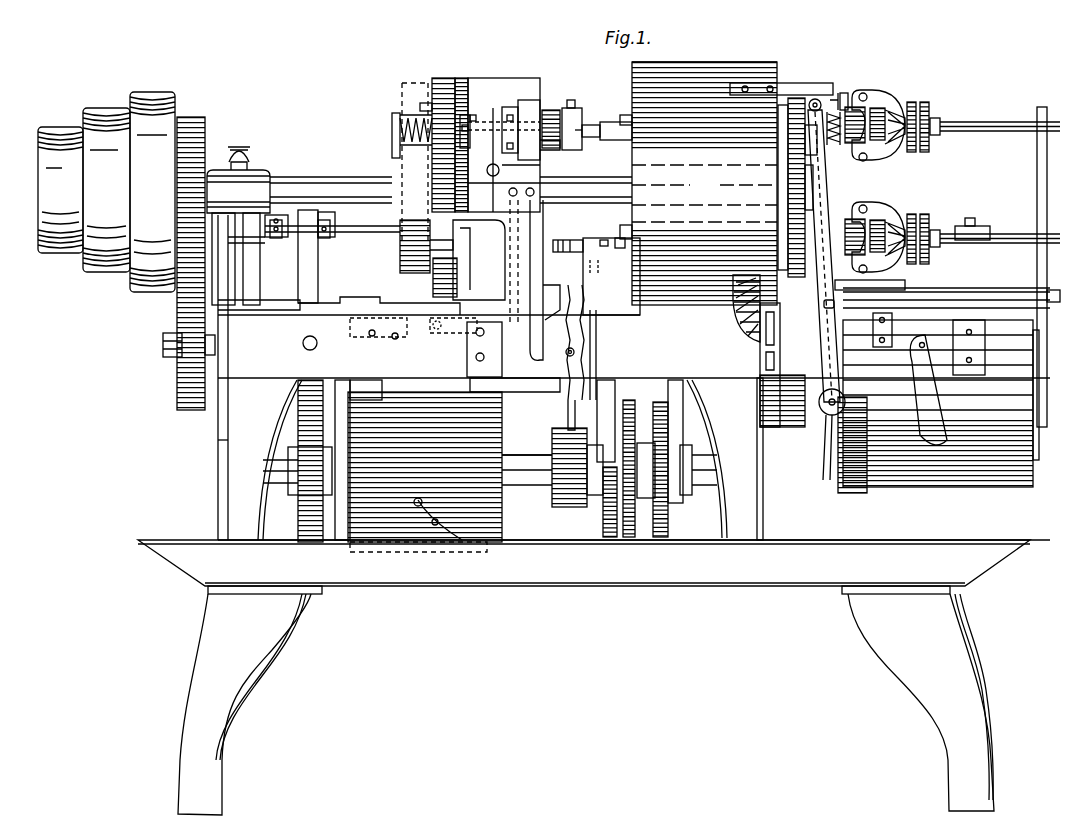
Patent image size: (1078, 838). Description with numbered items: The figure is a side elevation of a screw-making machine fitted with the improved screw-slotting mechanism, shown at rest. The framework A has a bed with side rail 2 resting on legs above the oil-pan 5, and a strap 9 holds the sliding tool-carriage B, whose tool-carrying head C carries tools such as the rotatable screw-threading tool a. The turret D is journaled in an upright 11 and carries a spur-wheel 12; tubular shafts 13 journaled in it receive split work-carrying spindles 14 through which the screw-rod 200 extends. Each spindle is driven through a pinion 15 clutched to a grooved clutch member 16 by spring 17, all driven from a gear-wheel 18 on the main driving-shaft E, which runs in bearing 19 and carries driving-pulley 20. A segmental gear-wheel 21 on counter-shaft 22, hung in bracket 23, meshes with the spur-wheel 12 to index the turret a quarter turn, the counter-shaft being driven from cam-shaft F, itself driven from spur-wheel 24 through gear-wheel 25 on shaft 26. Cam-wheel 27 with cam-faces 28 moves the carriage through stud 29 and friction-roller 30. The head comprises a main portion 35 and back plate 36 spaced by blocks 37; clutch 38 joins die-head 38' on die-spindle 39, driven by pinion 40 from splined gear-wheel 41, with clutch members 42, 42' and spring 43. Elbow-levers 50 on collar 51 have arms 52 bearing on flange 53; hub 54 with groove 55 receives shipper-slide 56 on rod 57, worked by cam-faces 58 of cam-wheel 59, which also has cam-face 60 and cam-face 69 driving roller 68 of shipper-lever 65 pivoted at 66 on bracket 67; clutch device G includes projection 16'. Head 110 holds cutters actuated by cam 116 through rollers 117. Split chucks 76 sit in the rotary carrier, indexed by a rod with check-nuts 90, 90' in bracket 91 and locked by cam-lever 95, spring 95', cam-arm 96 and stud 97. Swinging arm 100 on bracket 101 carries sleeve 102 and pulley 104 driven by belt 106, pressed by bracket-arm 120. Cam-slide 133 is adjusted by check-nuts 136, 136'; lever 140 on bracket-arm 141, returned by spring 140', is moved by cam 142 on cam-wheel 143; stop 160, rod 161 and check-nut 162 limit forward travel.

The side rail 2 is at (272, 376).
The oil-pan 5 is at (160, 548).
The strap 9 is at (450, 300).
The upright 11 is at (726, 183).
The spur or driving-wheel 12 is at (740, 313).
The tubular shaft or sleeve 13 is at (795, 100).
The split chuck-sleeve or work-carrying spindle 14 is at (942, 124).
The pinion 15 is at (838, 98).
The clutch member 16 is at (829, 156).
The L-shaped projection 16' is at (829, 79).
The spiral spring 17 is at (840, 143).
The gear-wheel 18 is at (813, 193).
The bearing 19 is at (220, 170).
The driving-pulley 20 is at (98, 116).
The segmental gear-wheel 21 is at (776, 360).
The counter-shaft 22 is at (1034, 425).
The bracket or hanger 23 is at (323, 412).
The spur-wheel 24 is at (192, 123).
The gear-wheel 25 is at (185, 290).
The shaft 26 is at (180, 358).
The cam-wheel 27 is at (398, 542).
The cam-faces 28 is at (383, 392).
The stud 29 is at (472, 380).
The friction-roller 30 is at (487, 402).
The forward or main portion of tool-carriage head 35 is at (540, 92).
The back plate 36 is at (460, 127).
The blocks 37 is at (460, 80).
The pull-off or pin clutch device member 38 is at (555, 115).
The die-head 38' is at (584, 116).
The die-spindle 39 is at (575, 140).
The pinion 40 is at (472, 100).
The gear-wheel 41 is at (473, 184).
The clutch member 42 is at (397, 128).
The clutch member 42' is at (420, 82).
The spring 43 is at (420, 146).
The elbow-levers 50 is at (875, 113).
The collar 51 is at (868, 95).
The inwardly-extending arms 52 is at (910, 113).
The flange 53 is at (918, 152).
The hub 54 is at (928, 140).
The annular groove 55 is at (950, 120).
The shipper-slide 56 is at (962, 246).
The rod 57 is at (930, 297).
The cam-faces 58 is at (918, 400).
The cam-wheel 59 is at (967, 462).
The cam-face 60 is at (988, 343).
The shipper-lever 65 is at (826, 414).
The pivot 66 is at (826, 298).
The bracket 67 is at (826, 348).
The roller 68 is at (828, 440).
The cam-face 69 is at (840, 472).
The tubular split chucks 76 is at (572, 246).
The check-nut 90 is at (332, 238).
The check-nut 90' is at (334, 237).
The bracket 91 is at (315, 265).
The cam-lever 95 is at (395, 321).
The spring 95' is at (398, 342).
The curved cam-arm 96 is at (395, 339).
The spring-pressed stud 97 is at (372, 336).
The swinging arm 100 is at (550, 142).
The bracket 101 is at (513, 108).
The transverse sleeve 102 is at (479, 260).
The driving-pulley 104 is at (400, 246).
The driving-belt 106 is at (402, 90).
The head 110 is at (611, 276).
The cam 116 is at (610, 512).
The friction-rollers 117 is at (633, 442).
The bracket-arm 120 is at (520, 257).
The cam-slide 133 is at (298, 237).
The check-nut 136 is at (296, 189).
The check-nut 136' is at (343, 186).
The lever 140 is at (563, 333).
The spring 140' is at (582, 300).
The bracket-arm 141 is at (568, 428).
The cam 142 is at (553, 440).
The cam-wheel 143 is at (563, 506).
The stop 160 is at (355, 277).
The rod 161 is at (262, 242).
The check-nut 162 is at (440, 300).
The screw-rod 200 is at (1000, 173).
The framework A is at (203, 460).
The tool-carriage B is at (317, 336).
The tool-carrying head C is at (504, 133).
The work-spindle-carrying head or turret D is at (704, 52).
The main driving-shaft E is at (451, 178).
The cam-shaft F is at (520, 482).
The clutch device G is at (851, 82).
The screw-threading tool a is at (577, 135).